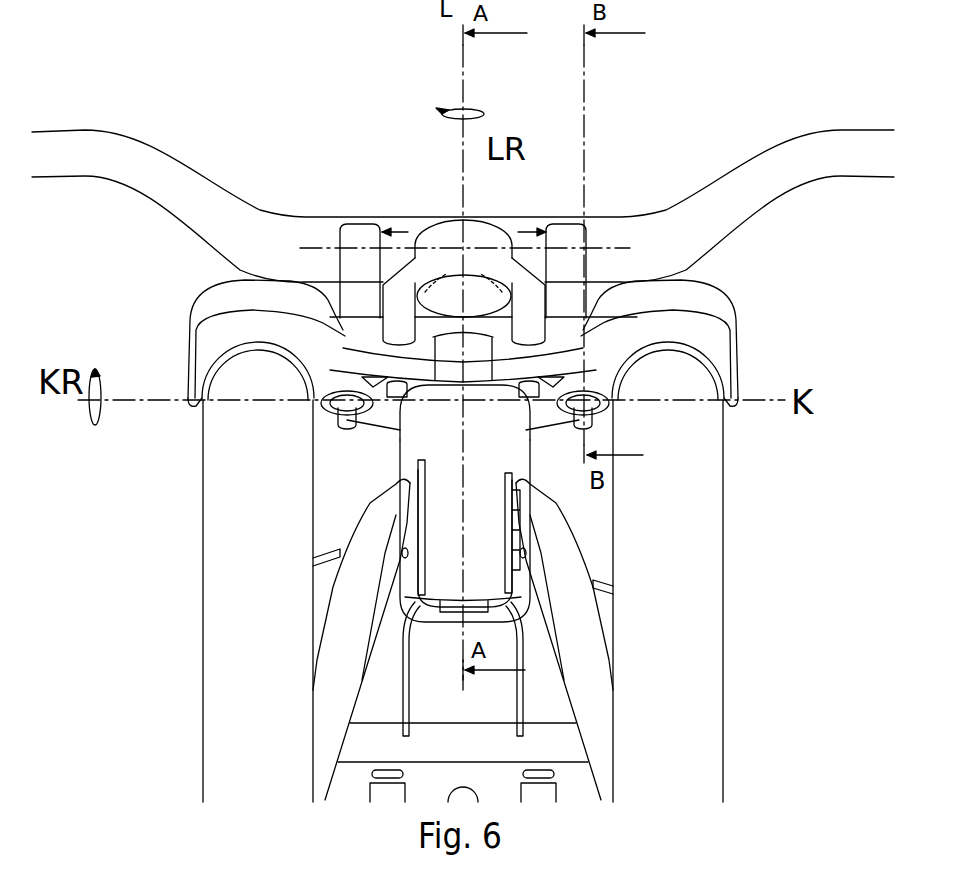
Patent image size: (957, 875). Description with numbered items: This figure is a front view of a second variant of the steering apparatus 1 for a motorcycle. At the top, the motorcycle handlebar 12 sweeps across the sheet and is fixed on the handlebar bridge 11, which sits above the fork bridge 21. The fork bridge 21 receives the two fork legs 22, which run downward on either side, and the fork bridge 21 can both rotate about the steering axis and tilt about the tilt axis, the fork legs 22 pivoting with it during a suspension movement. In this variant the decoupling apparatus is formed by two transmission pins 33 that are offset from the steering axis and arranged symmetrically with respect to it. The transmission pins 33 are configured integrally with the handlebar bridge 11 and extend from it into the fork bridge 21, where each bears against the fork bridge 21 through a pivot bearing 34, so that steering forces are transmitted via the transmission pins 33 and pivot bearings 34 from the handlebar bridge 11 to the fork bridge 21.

The steering apparatus 1 is at (146, 103).
The handlebar bridge 11 is at (353, 237).
The motorcycle handlebar 12 is at (785, 188).
The fork bridge 21 is at (200, 318).
The fork legs 22 is at (217, 537).
The transmission pins 33 is at (343, 412).
The pivot bearing 34 is at (360, 415).